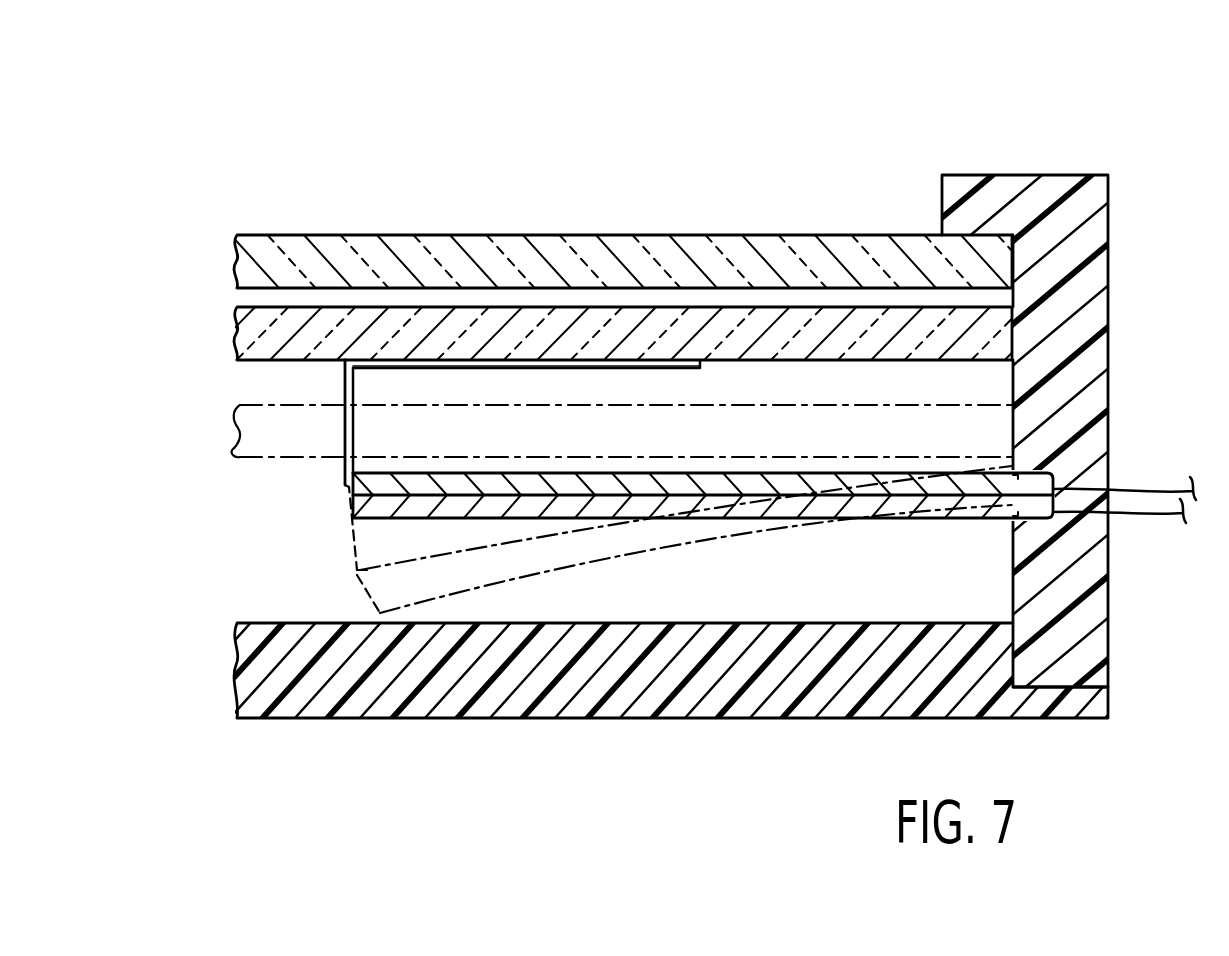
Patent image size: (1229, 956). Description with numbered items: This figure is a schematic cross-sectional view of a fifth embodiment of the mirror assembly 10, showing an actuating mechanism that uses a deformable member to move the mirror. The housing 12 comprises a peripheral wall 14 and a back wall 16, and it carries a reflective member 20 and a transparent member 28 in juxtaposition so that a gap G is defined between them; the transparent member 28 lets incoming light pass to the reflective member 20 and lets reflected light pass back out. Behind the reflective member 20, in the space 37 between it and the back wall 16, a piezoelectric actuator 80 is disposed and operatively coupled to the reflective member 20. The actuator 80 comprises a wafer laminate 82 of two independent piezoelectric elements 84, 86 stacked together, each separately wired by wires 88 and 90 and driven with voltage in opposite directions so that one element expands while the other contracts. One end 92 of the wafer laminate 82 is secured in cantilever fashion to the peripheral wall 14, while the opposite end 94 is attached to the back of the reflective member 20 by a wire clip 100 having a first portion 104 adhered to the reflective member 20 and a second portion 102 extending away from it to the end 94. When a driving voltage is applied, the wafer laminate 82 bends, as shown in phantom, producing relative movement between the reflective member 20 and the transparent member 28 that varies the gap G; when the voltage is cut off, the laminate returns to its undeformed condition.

The mirror assembly 10 is at (893, 109).
The housing 12 is at (1130, 198).
The peripheral wall 14 is at (1098, 383).
The back wall 16 is at (679, 709).
The reflective member 20 is at (762, 320).
The transparent member 28 is at (335, 245).
The space 37 is at (315, 607).
The piezoelectric actuator 80 is at (333, 510).
The wafer laminate 82 is at (818, 538).
The piezoelectric element 84 is at (541, 507).
The piezoelectric element 86 is at (561, 481).
The wire 88 is at (1155, 516).
The wire 90 is at (1163, 491).
The end of wafer laminate 92 is at (1043, 518).
The opposite end of wafer laminate 94 is at (348, 518).
The wire clip 100 is at (310, 386).
The second portion of wire clip 102 is at (353, 393).
The first portion of wire clip 104 is at (633, 370).
The gap G is at (527, 385).